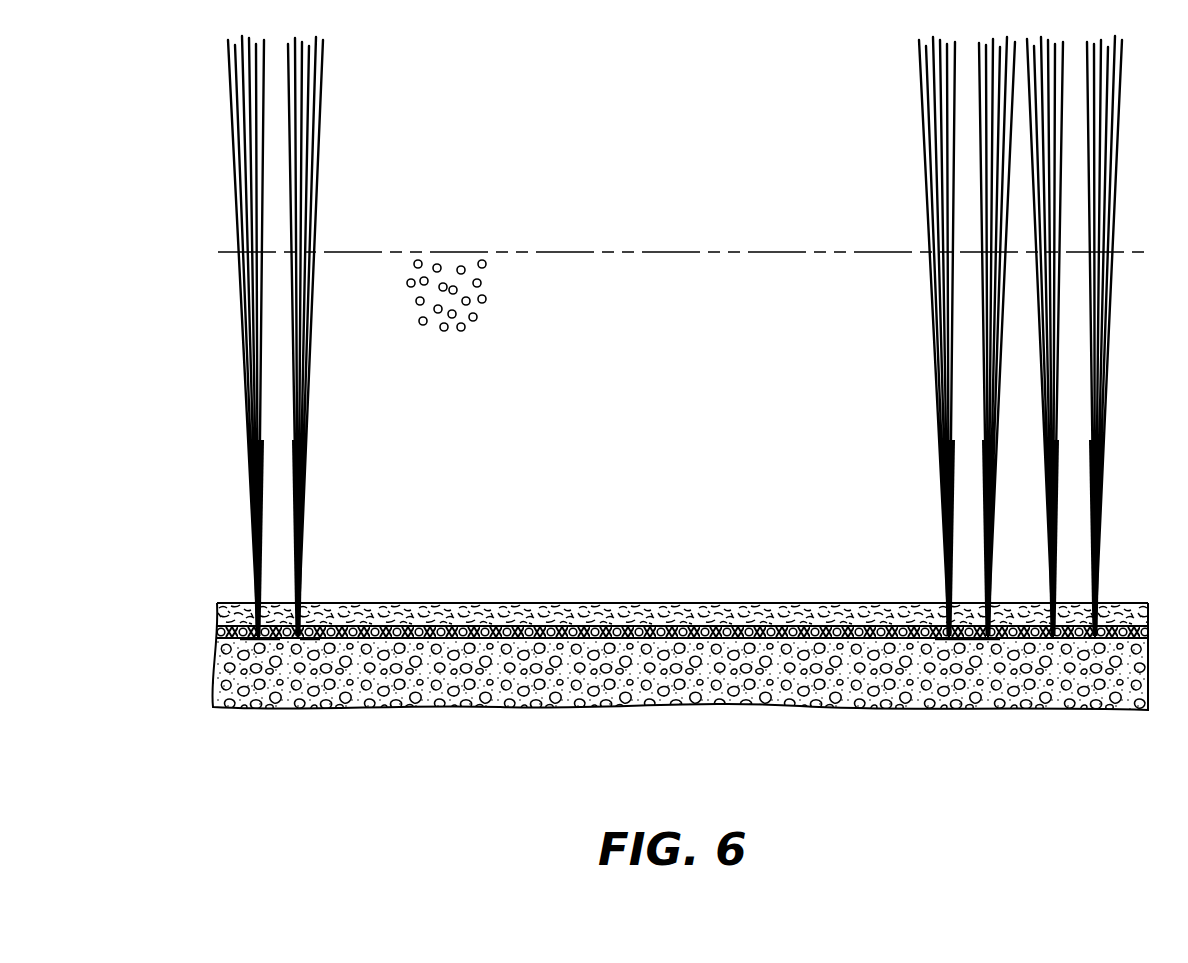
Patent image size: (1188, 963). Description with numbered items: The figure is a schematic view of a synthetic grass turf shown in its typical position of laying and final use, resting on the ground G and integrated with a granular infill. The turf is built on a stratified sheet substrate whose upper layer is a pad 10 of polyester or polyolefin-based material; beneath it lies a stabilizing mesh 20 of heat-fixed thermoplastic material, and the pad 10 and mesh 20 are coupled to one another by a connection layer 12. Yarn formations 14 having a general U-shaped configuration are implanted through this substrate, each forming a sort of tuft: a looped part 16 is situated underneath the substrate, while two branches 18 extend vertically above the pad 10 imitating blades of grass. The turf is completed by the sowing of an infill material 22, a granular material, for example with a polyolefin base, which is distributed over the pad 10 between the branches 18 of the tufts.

The pad 10 is at (512, 610).
The connection layer 12 is at (430, 628).
The yarn formations 14 is at (255, 647).
The looped part 16 is at (283, 642).
The branches 18 is at (250, 458).
The stabilizing mesh 20 is at (376, 628).
The infill material 22 is at (461, 266).
The ground G is at (443, 690).